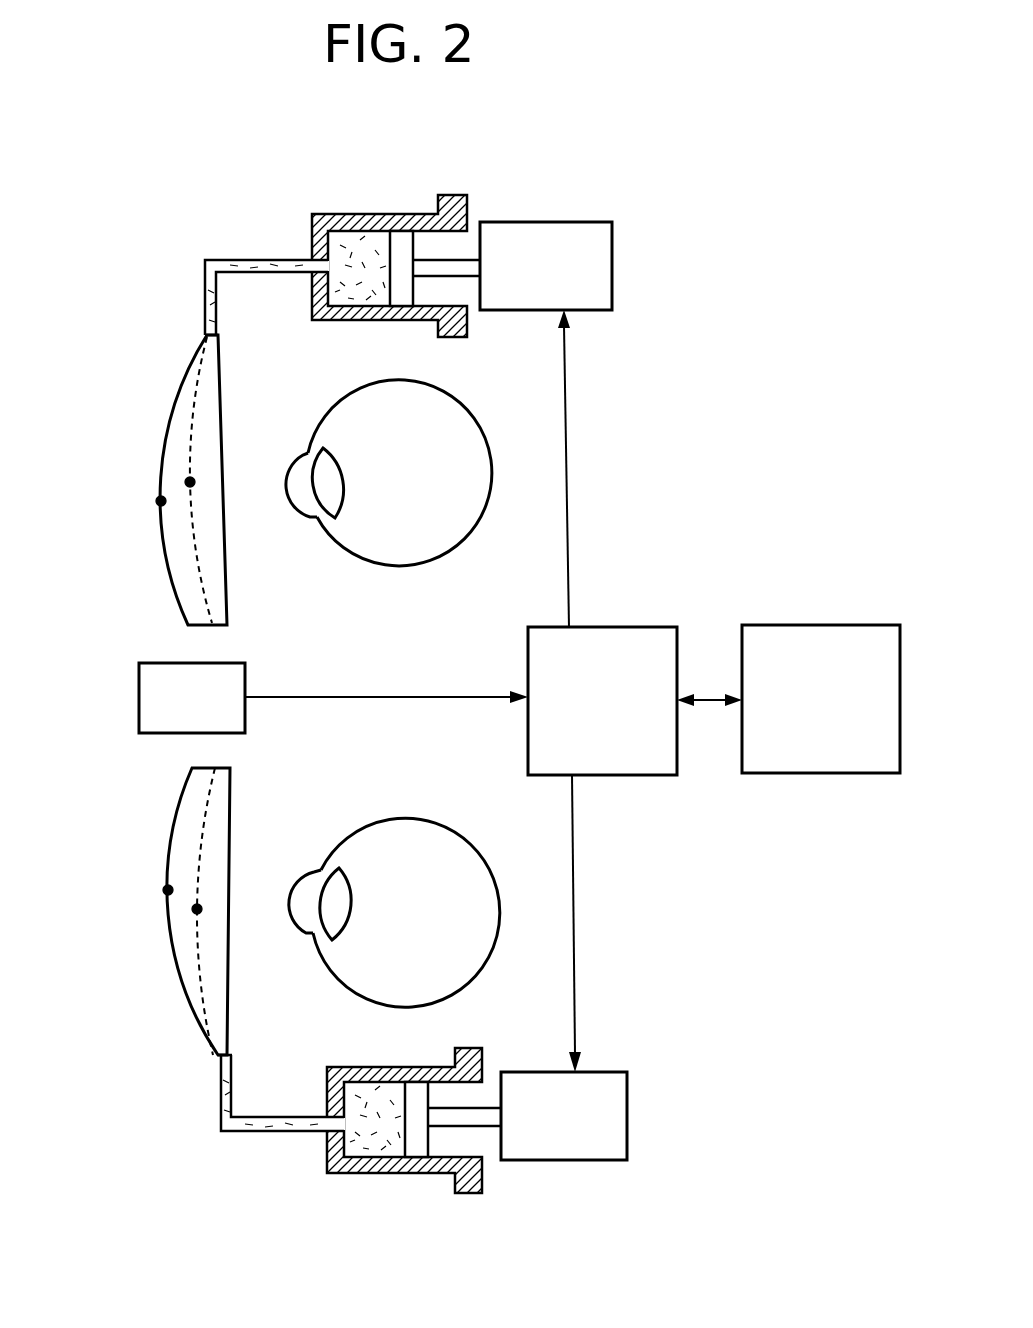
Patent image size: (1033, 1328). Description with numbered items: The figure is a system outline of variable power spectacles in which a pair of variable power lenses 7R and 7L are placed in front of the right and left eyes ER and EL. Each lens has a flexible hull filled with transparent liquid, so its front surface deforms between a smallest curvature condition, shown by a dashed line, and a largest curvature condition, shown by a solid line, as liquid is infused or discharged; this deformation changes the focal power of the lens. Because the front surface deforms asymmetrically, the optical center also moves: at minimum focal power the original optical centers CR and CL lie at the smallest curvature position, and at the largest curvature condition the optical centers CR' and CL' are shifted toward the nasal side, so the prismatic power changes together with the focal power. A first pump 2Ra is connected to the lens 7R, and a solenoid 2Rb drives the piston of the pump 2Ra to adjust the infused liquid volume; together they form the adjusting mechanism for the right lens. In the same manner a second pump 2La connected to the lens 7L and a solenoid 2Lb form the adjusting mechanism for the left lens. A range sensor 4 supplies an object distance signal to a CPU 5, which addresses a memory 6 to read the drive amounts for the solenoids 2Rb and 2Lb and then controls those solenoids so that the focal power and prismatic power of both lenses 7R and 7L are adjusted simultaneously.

The first pump 2Ra is at (312, 224).
The solenoid 2Rb is at (545, 228).
The variable power lens 7R is at (187, 442).
The original optical center CR is at (126, 479).
The optical center CR' is at (112, 513).
The right eye ER is at (432, 543).
The range sensor 4 is at (235, 675).
The CPU 5 is at (528, 653).
The memory 6 is at (798, 765).
The left eye EL is at (432, 833).
The variable power lens 7L is at (200, 847).
The optical center CL' is at (119, 883).
The original optical center CL is at (134, 910).
The second pump 2La is at (327, 1157).
The solenoid 2Lb is at (568, 1155).